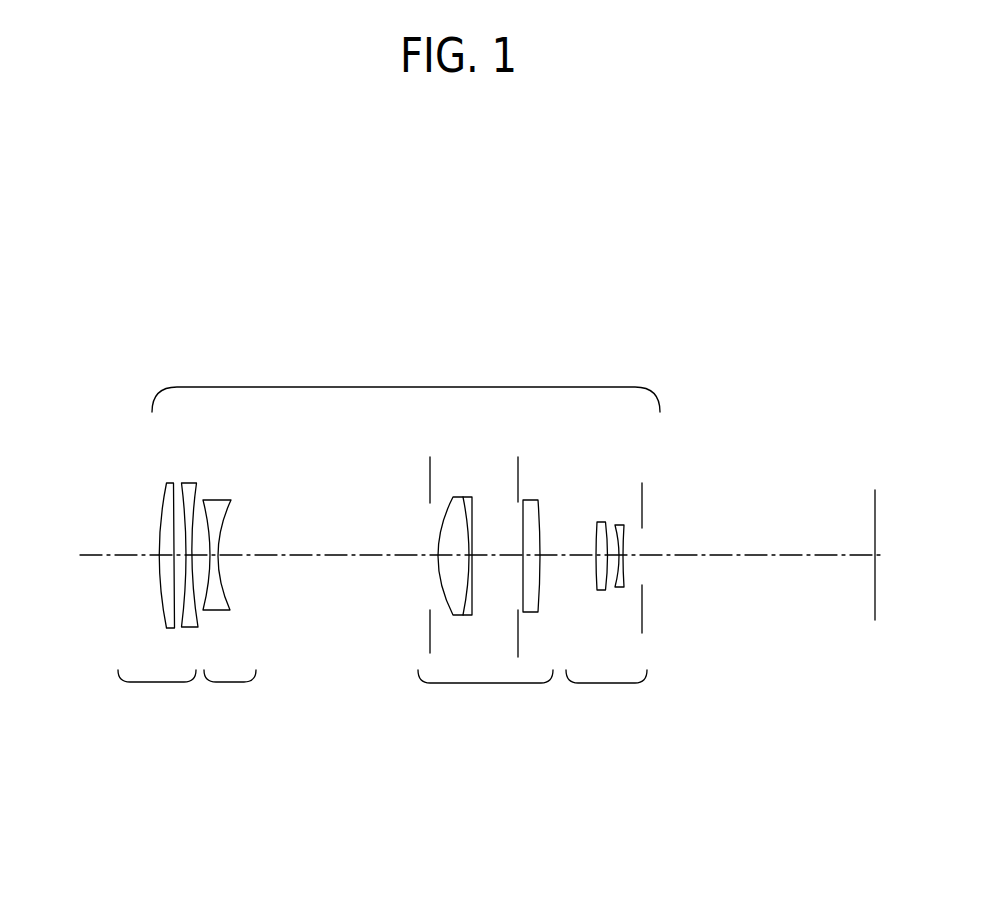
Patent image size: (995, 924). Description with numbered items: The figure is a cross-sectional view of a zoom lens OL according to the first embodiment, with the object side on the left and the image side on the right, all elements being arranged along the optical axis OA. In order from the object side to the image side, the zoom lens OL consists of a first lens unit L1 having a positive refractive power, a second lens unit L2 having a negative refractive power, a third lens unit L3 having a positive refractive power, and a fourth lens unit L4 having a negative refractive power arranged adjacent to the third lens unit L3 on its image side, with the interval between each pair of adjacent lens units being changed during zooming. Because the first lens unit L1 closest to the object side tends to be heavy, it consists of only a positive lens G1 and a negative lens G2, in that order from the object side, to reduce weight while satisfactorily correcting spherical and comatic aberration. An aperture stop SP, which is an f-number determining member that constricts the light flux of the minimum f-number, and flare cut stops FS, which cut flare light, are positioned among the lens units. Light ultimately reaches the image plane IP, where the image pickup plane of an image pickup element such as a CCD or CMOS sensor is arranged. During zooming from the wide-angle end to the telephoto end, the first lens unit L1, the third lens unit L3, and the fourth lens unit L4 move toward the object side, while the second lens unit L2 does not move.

The zoom lens OL is at (406, 376).
The optical axis OA is at (461, 555).
The first lens unit L1 is at (167, 598).
The second lens unit L2 is at (229, 807).
The third lens unit L3 is at (431, 778).
The fourth lens unit L4 is at (562, 775).
The positive lens G1 is at (171, 483).
The negative lens G2 is at (192, 487).
The flare cut stop FS is at (421, 448).
The aperture stop SP is at (510, 448).
The image plane IP is at (859, 473).